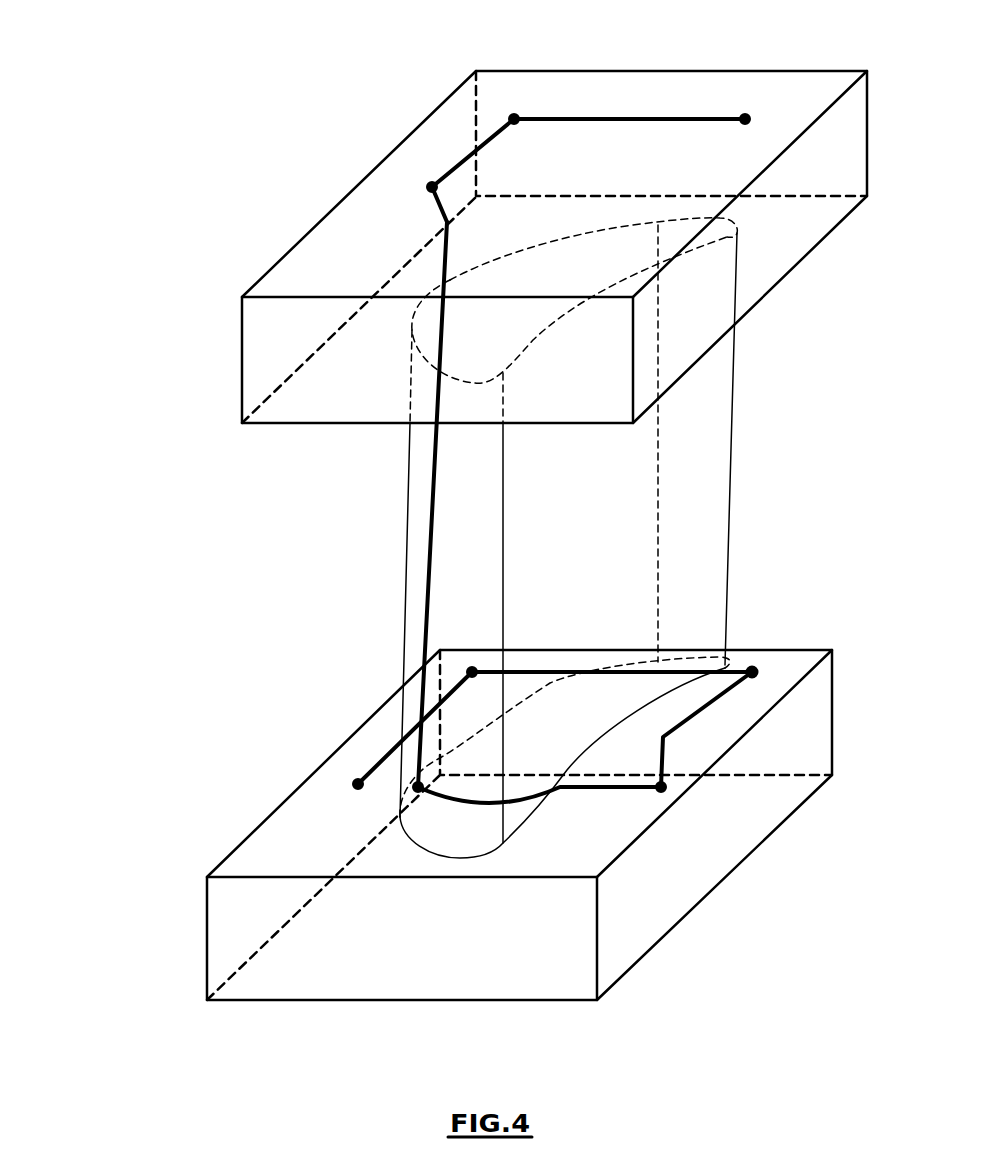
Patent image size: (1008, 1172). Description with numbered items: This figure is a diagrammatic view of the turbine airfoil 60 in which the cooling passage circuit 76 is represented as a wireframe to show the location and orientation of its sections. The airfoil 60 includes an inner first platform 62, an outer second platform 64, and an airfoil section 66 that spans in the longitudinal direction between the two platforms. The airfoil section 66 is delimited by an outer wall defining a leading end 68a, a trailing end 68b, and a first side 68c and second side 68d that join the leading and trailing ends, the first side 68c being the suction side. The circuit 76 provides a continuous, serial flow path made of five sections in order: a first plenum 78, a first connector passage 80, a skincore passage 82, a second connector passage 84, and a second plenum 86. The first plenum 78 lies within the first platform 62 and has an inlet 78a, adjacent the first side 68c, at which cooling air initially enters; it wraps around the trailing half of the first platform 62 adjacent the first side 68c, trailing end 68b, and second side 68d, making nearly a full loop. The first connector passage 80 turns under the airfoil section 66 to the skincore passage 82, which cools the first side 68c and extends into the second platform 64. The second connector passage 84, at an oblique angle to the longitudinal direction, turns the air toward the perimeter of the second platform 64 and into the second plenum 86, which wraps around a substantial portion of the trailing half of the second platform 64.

The turbine airfoil 60 is at (460, 515).
The first platform 62 is at (643, 913).
The second platform 64 is at (793, 227).
The airfoil section 66 is at (574, 503).
The leading end 68a is at (407, 508).
The trailing end 68b is at (732, 403).
The first side 68c is at (538, 237).
The second side 68d is at (530, 342).
The circuit 76 is at (748, 666).
The first plenum 78 is at (537, 739).
The inlet 78a is at (353, 783).
The first connector passage 80 is at (617, 787).
The skincore passage 82 is at (428, 568).
The second connector passage 84 is at (430, 208).
The second plenum 86 is at (663, 119).